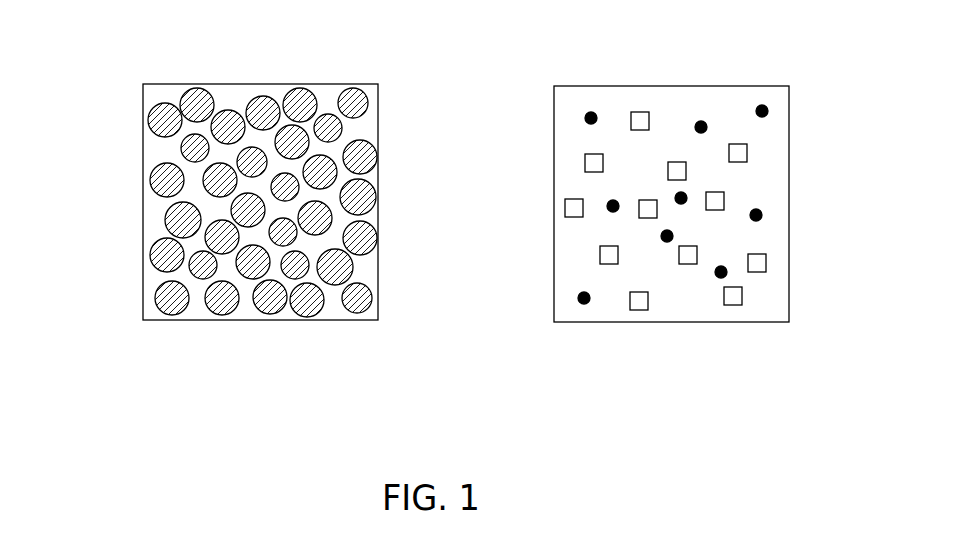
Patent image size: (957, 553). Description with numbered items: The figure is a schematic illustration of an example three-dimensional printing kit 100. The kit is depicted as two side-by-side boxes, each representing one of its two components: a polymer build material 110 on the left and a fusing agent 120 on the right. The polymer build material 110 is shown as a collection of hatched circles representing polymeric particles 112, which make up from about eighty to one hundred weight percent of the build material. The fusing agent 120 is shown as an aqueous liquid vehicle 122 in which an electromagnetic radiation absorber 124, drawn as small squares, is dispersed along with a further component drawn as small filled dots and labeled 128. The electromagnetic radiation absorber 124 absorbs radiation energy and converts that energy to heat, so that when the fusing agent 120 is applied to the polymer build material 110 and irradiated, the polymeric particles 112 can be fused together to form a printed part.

The three-dimensional printing kit 100 is at (147, 50).
The polymer build material 110 is at (294, 235).
The polymeric particles 112 is at (334, 130).
The fusing agent 120 is at (711, 239).
The aqueous liquid vehicle 122 is at (755, 136).
The electromagnetic radiation absorber 124 is at (766, 258).
The third particles 128 is at (762, 212).